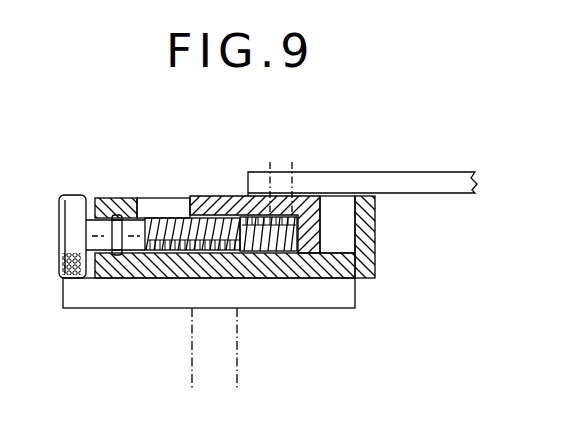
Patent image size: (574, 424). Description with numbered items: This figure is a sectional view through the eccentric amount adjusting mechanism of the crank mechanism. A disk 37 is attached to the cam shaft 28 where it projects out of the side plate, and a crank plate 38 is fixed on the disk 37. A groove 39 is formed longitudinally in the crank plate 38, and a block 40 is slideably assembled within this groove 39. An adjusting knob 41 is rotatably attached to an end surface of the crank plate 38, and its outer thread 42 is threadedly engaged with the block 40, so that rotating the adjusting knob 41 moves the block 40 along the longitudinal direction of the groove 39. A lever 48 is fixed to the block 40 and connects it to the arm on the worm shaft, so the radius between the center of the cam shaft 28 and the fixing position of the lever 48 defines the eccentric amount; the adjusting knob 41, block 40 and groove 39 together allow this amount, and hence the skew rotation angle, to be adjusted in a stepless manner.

The cam shaft 28 is at (237, 368).
The disk 37 is at (270, 298).
The crank plate 38 is at (183, 270).
The groove 39 is at (337, 251).
The block 40 is at (213, 208).
The adjusting knob 41 is at (72, 198).
The outer thread 42 is at (160, 212).
The lever 48 is at (424, 186).